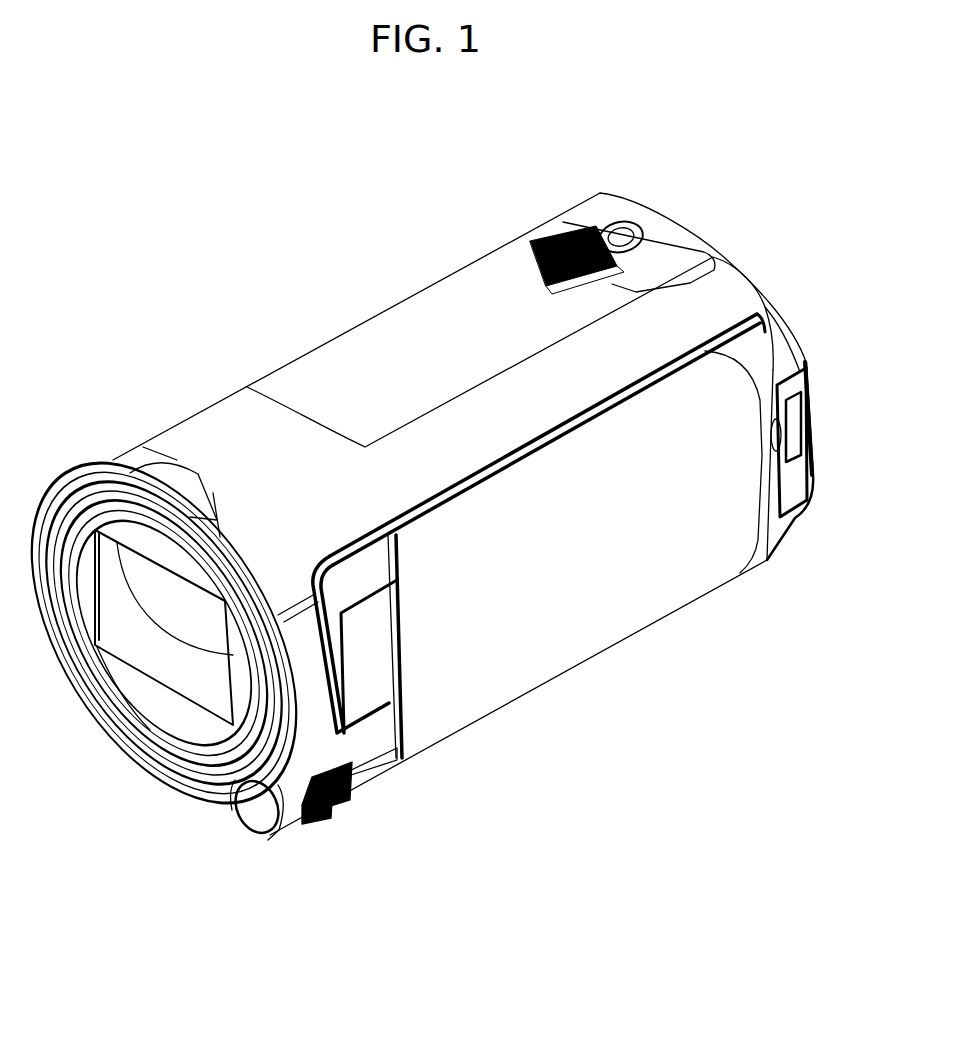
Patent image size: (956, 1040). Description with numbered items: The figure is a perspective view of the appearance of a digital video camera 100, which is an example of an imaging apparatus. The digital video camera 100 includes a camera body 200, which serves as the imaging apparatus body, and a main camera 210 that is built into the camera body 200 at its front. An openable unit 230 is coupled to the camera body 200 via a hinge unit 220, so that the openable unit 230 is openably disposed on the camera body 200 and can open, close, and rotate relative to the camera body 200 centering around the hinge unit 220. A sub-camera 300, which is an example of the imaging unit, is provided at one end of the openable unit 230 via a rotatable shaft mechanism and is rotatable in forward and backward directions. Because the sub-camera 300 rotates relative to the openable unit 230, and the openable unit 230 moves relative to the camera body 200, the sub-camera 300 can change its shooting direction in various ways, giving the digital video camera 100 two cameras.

The digital video camera 100 is at (281, 248).
The camera body 200 is at (450, 420).
The main camera 210 is at (163, 633).
The hinge unit 220 is at (398, 687).
The openable unit 230 is at (649, 528).
The sub-camera 300 is at (813, 477).